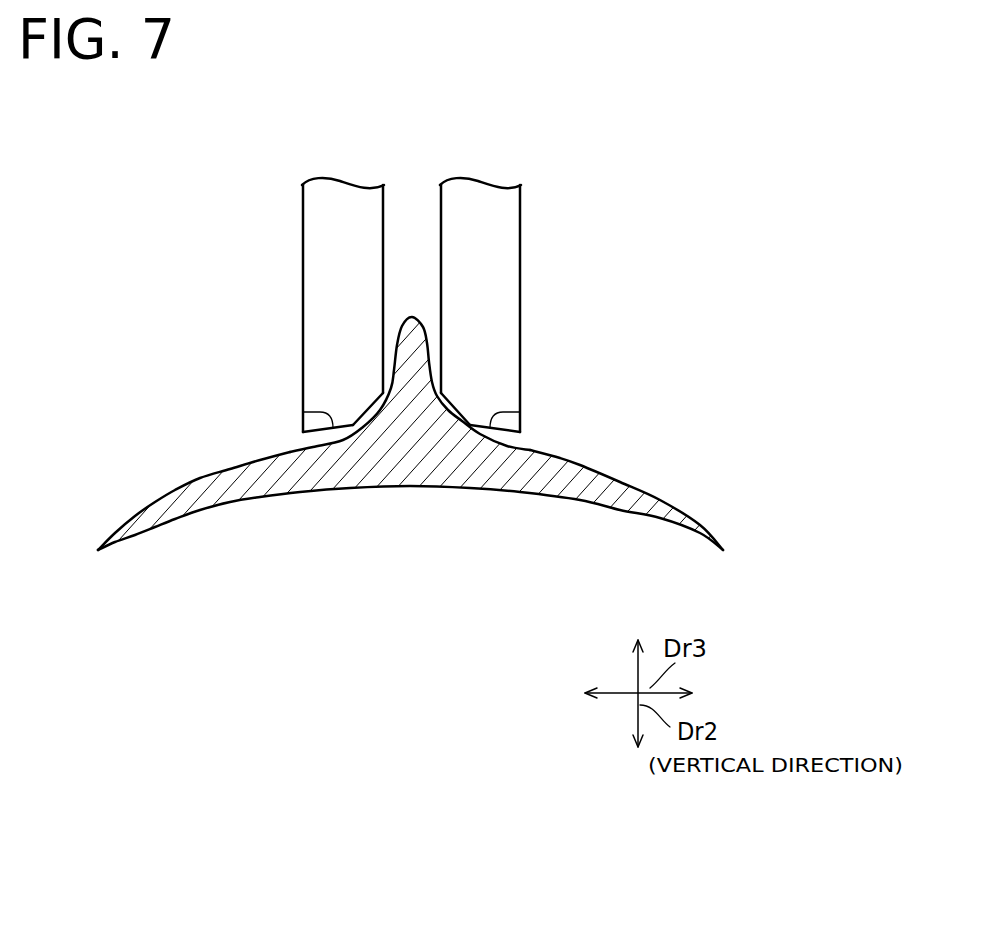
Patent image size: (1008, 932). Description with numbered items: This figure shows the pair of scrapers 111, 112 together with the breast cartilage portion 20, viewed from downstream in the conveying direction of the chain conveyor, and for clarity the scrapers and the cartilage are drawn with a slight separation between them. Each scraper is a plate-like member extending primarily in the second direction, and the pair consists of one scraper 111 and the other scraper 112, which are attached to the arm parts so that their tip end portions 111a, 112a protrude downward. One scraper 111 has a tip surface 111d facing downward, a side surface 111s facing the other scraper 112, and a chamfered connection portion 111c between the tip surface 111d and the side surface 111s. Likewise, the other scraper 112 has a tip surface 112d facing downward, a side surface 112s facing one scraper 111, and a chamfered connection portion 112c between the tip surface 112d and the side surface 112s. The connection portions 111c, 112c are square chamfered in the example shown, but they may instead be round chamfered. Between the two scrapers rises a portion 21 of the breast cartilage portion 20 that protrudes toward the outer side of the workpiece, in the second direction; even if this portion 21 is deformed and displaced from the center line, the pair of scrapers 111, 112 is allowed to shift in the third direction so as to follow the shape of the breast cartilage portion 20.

The breast cartilage portion 20 is at (638, 493).
The portion of the breast cartilage portion 21 is at (415, 338).
The one scraper 111 is at (284, 305).
The side surface 111s is at (383, 315).
The tip end portion 111a is at (322, 348).
The connection portion 111c is at (377, 398).
The tip surface 111d is at (303, 412).
The other scraper 112 is at (541, 305).
The side surface 112s is at (441, 315).
The tip end portion 112a is at (501, 348).
The connection portion 112c is at (447, 398).
The tip surface 112d is at (520, 412).